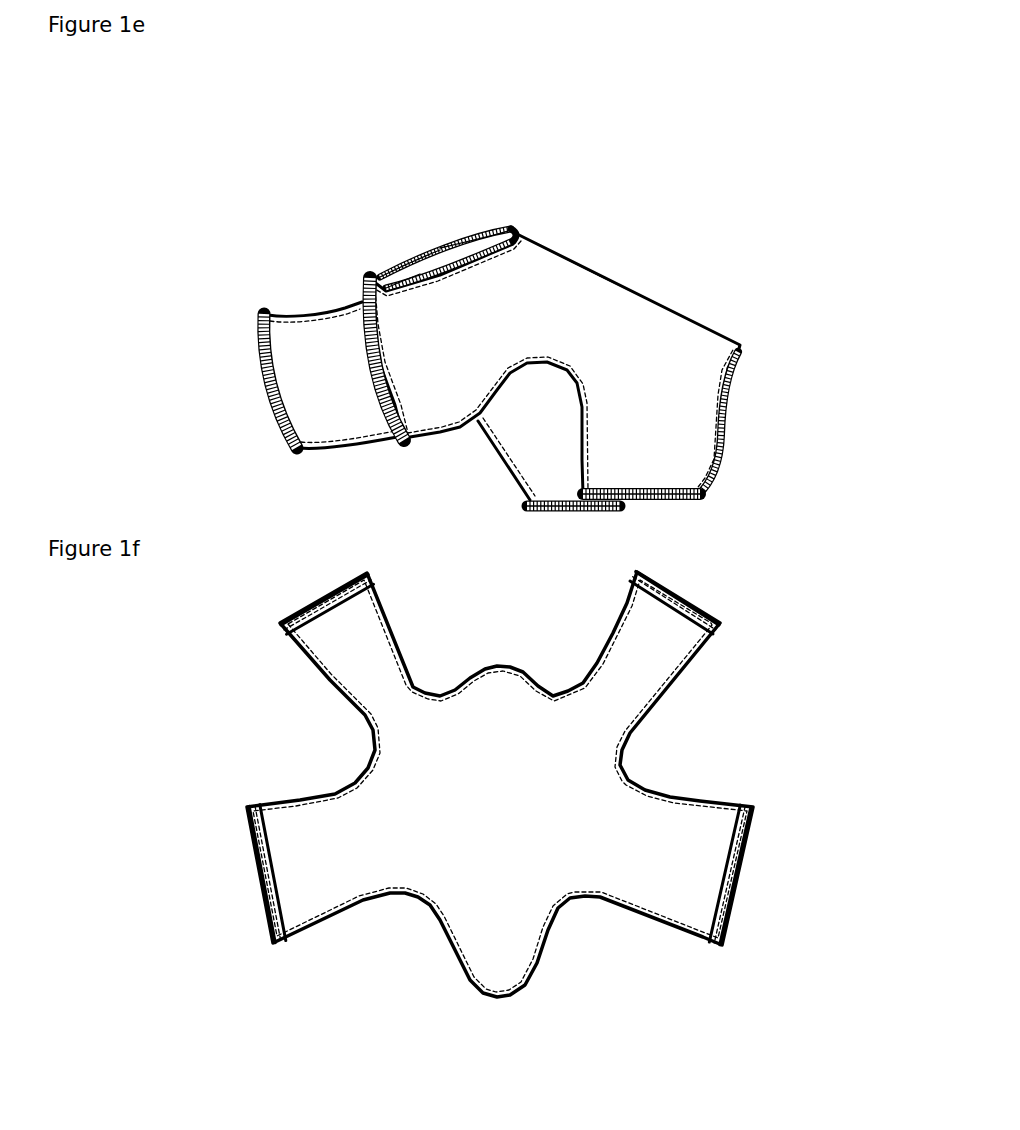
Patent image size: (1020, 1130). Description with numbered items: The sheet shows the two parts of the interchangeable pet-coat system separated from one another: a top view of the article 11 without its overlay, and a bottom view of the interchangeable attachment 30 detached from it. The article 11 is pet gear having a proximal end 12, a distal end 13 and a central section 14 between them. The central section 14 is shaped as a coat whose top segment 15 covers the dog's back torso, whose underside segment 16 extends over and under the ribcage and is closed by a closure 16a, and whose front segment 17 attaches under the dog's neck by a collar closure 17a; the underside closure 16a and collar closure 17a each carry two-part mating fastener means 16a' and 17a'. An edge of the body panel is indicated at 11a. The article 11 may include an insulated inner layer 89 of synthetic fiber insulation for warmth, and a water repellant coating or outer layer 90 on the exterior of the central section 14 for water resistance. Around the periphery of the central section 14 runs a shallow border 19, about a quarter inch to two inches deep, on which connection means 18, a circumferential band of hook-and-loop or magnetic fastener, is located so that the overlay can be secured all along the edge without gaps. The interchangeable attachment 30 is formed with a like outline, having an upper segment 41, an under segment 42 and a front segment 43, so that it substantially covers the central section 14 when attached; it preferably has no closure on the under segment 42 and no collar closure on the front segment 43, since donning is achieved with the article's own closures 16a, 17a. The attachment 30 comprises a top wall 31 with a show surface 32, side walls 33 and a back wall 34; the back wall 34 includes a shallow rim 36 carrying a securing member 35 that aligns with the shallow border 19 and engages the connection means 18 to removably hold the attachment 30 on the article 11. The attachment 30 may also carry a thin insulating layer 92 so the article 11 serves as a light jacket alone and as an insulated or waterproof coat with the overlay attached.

In FIG. 1E, the article 11 is at (562, 324).
In FIG. 1E, the body panel edge 11a is at (657, 317).
In FIG. 1E, the proximal end 12 is at (505, 238).
In FIG. 1E, the distal end 13 is at (742, 395).
In FIG. 1E, the central section 14 is at (587, 314).
In FIG. 1E, the top segment 15 is at (510, 310).
In FIG. 1E, the underside segment 16 is at (693, 447).
In FIG. 1E, the closure 16a is at (632, 507).
In FIG. 1E, the mating fastener means 16a' is at (584, 548).
In FIG. 1E, the front segment 17 is at (365, 287).
In FIG. 1E, the collar closure 17a is at (241, 428).
In FIG. 1E, the mating fastener means 17a' is at (276, 387).
In FIG. 1E, the connection means 18 is at (480, 232).
In FIG. 1E, the shallow border 19 is at (417, 243).
In FIG. 1E, the insulated inner layer 89 is at (417, 246).
In FIG. 1E, the water repellant coating/outer layer 90 is at (605, 300).
In FIG. 1F, the interchangeable attachment 30 is at (521, 792).
In FIG. 1F, the top wall 31 is at (527, 903).
In FIG. 1F, the show surface 32 is at (540, 915).
In FIG. 1F, the side walls 33 is at (485, 990).
In FIG. 1F, the back wall 34 is at (253, 857).
In FIG. 1F, the securing member 35 is at (637, 737).
In FIG. 1F, the shallow rim 36 is at (320, 655).
In FIG. 1F, the upper segment 41 is at (460, 870).
In FIG. 1F, the under segment 42 is at (350, 867).
In FIG. 1F, the front segment 43 is at (355, 663).
In FIG. 1F, the thin insulating layer 92 is at (693, 848).